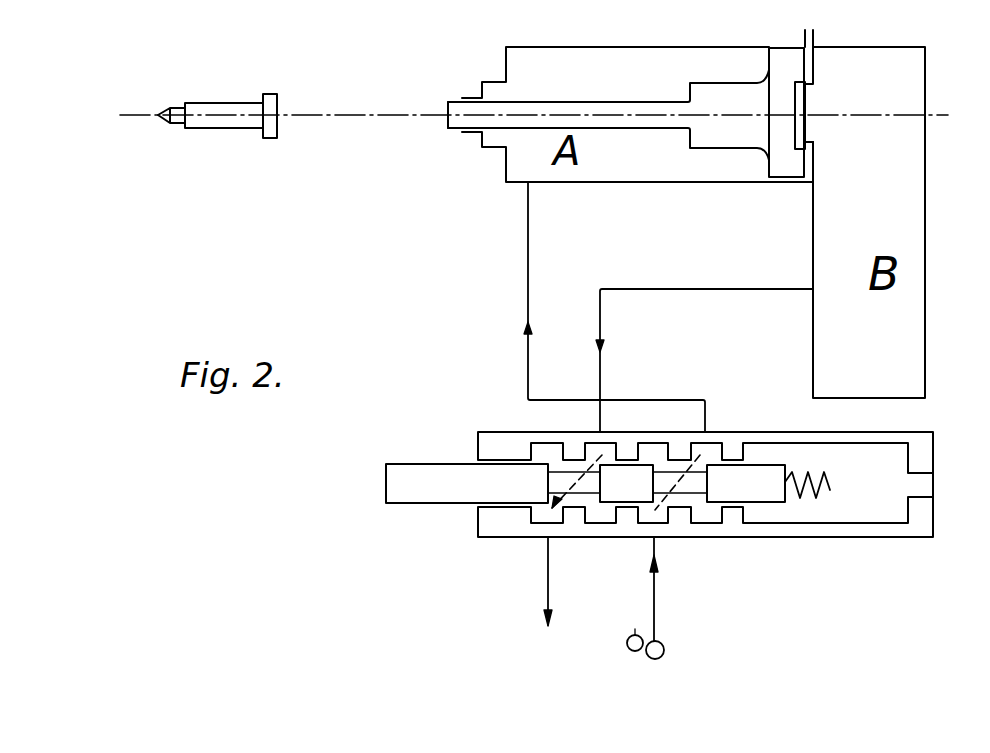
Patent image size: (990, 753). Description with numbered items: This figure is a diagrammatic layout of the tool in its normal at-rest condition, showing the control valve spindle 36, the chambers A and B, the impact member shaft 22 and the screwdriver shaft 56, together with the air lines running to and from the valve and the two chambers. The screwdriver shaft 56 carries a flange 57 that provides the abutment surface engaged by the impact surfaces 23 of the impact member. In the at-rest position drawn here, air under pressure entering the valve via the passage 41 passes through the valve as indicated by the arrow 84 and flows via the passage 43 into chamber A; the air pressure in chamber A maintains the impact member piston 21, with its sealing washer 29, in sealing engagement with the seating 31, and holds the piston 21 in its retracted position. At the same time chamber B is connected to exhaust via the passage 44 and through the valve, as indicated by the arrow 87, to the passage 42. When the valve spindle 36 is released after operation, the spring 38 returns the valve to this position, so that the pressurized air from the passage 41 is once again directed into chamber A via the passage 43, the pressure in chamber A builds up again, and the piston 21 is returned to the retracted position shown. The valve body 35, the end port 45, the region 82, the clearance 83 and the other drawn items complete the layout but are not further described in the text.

The impact member piston 21 is at (783, 62).
The impact member shaft 22 is at (621, 107).
The impact surfaces 23 is at (449, 104).
The sealing washer 29 is at (799, 102).
The seating 31 is at (807, 142).
The valve body 35 is at (888, 430).
The control valve spindle 36 is at (443, 470).
The spring 38 is at (818, 493).
The passage 41 is at (655, 588).
The passage 42 is at (549, 568).
The passage 43 is at (529, 250).
The passage 44 is at (710, 288).
The vent port 45 is at (915, 487).
The screwdriver shaft 56 is at (211, 107).
The flange 57 is at (269, 104).
The chamber 82 is at (808, 168).
The clearance gap 83 is at (806, 33).
The arrow 84 is at (700, 455).
The arrow 87 is at (567, 487).